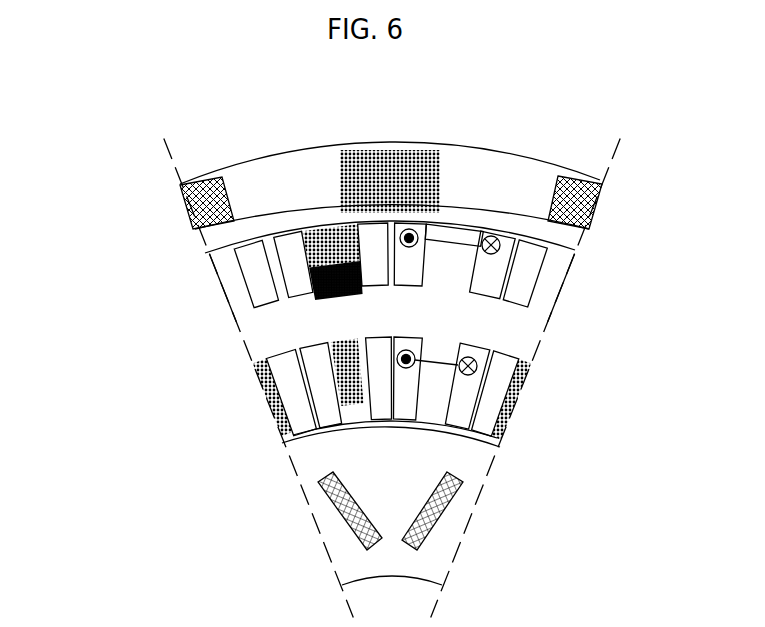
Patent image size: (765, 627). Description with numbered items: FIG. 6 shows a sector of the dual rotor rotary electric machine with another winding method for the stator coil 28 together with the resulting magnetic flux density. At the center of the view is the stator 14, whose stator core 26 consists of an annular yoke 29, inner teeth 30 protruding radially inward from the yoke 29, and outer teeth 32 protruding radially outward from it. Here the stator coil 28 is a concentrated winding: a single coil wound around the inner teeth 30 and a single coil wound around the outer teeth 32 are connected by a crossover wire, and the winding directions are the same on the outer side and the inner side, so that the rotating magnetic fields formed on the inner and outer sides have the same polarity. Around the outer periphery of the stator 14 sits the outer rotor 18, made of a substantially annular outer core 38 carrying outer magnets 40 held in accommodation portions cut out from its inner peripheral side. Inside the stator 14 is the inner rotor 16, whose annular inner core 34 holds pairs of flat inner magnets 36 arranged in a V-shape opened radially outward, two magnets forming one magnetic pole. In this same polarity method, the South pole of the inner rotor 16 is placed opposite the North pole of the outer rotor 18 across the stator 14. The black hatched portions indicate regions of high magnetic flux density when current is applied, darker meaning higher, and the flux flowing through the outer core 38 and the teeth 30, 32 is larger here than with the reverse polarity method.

The stator 14 is at (408, 260).
The inner rotor 16 is at (369, 534).
The outer rotor 18 is at (322, 150).
The stator core 26 is at (457, 334).
The stator coil 28 is at (475, 232).
The yoke 29 is at (500, 322).
The inner teeth 30 is at (448, 388).
The outer teeth 32 is at (553, 283).
The inner core 34 is at (437, 563).
The inner magnet 36 is at (457, 493).
The outer core 38 is at (290, 173).
The outer magnets 40 is at (193, 181).